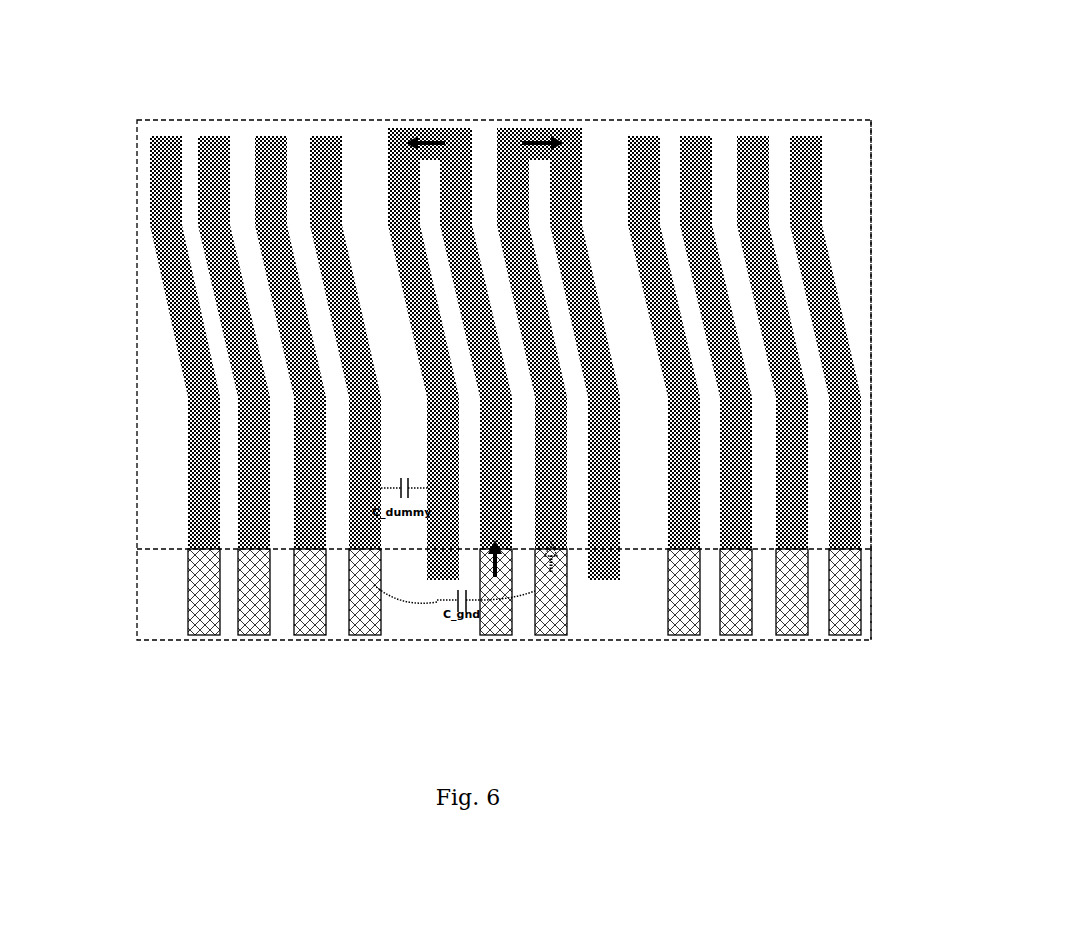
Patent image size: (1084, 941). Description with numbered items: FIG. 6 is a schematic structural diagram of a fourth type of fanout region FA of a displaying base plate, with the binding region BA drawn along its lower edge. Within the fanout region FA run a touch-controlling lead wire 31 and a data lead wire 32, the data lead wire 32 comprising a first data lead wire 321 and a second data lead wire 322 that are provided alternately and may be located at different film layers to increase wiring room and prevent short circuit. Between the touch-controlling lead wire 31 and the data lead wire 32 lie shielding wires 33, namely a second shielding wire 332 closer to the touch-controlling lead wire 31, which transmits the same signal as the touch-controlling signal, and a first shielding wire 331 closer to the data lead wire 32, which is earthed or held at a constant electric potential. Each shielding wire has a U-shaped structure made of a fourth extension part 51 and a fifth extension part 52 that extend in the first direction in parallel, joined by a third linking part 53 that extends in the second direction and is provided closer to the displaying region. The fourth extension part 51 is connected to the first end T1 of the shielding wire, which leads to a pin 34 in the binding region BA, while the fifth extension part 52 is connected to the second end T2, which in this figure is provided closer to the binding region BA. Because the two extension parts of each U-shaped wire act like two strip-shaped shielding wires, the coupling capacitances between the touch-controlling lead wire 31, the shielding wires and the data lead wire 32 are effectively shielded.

The touch-controlling lead wire 31 is at (265, 348).
The data lead wire 32 is at (782, 78).
The first data lead wire 321 is at (690, 359).
The second data lead wire 322 is at (799, 359).
The shielding wires 33 is at (437, 69).
The first shielding wire 331 is at (512, 232).
The second shielding wire 332 is at (463, 227).
The pin 34 is at (557, 613).
The fourth extension part 51 is at (490, 362).
The fifth extension part 52 is at (445, 440).
The third linking part 53 is at (437, 132).
The first end T1 is at (522, 627).
The second end T2 is at (523, 678).
The fanout region FA is at (871, 432).
The binding region BA is at (871, 603).